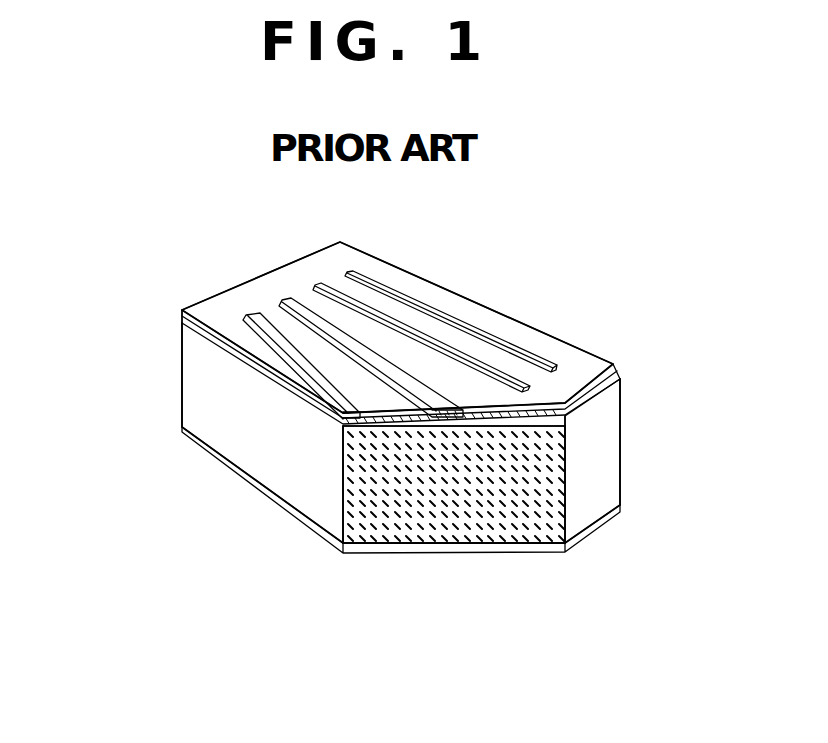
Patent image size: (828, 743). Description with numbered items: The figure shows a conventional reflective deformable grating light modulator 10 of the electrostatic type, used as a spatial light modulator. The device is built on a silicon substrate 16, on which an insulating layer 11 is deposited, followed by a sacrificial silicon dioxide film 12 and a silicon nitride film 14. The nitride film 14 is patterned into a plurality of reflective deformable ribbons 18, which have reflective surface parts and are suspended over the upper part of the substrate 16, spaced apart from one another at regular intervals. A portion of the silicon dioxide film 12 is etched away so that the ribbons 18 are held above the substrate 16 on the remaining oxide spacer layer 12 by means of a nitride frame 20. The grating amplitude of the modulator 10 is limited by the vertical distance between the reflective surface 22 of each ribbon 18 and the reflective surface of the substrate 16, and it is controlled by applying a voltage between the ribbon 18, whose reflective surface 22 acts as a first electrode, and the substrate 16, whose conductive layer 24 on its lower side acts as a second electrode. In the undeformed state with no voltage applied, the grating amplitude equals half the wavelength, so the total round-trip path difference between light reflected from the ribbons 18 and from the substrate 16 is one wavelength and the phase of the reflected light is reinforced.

The reflective deformable grating light modulator 10 is at (133, 325).
The insulating layer 11 is at (618, 381).
The sacrificial silicon dioxide film 12 is at (611, 363).
The silicon nitride film 14 is at (320, 406).
The substrate 16 is at (600, 477).
The reflective deformable ribbons 18 is at (276, 310).
The nitride frame 20 is at (478, 315).
The reflective surface 22 is at (267, 369).
The conductive layer 24 is at (487, 552).